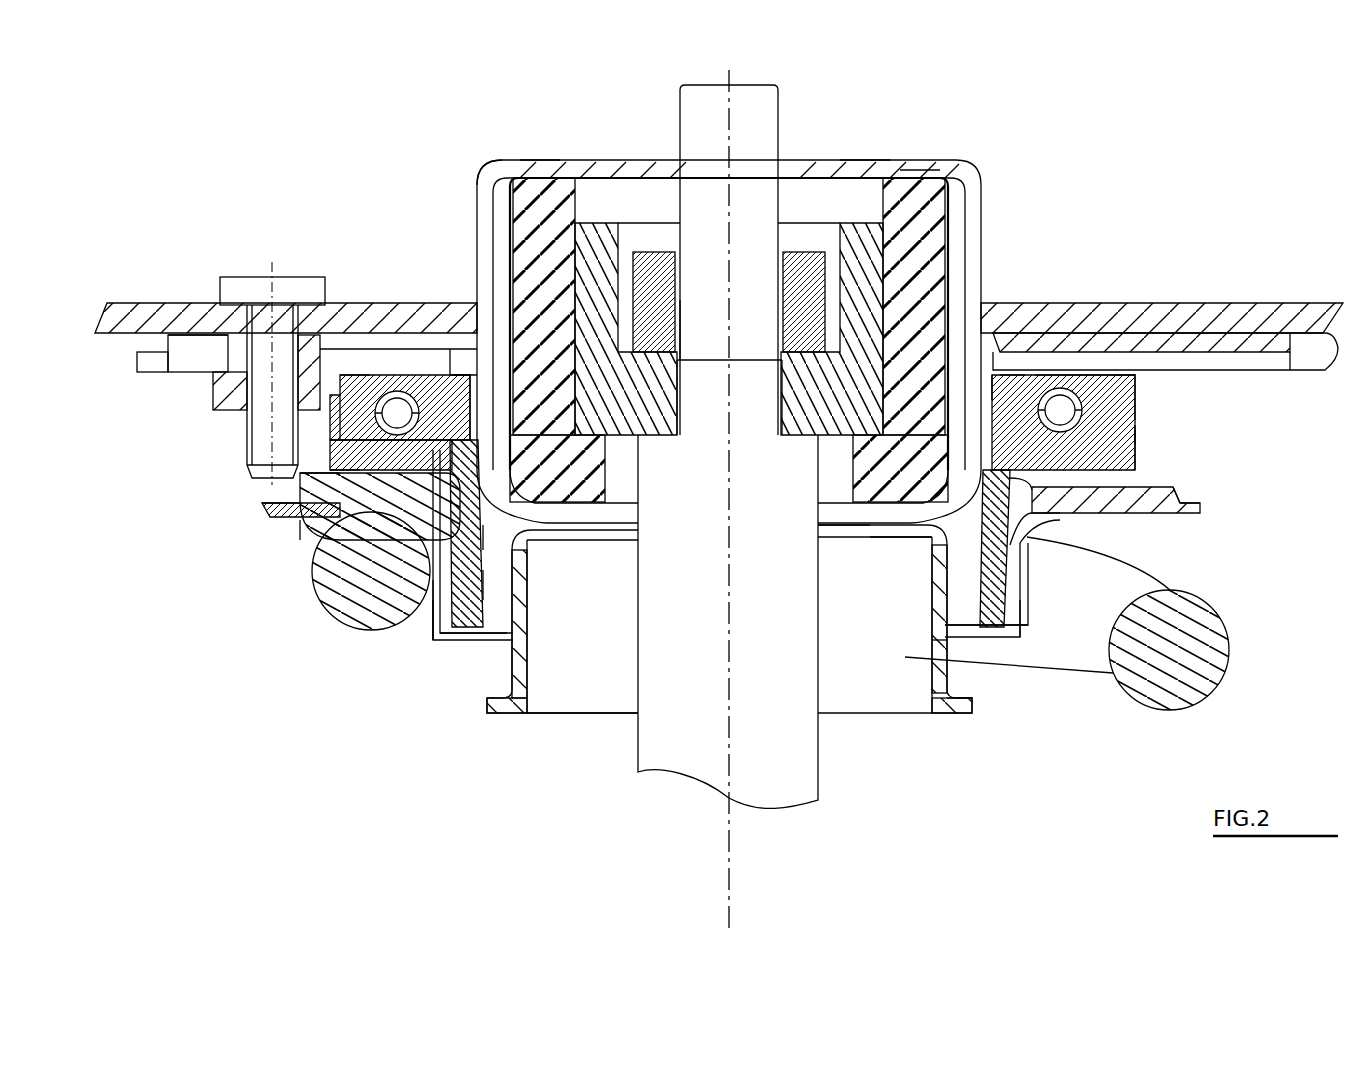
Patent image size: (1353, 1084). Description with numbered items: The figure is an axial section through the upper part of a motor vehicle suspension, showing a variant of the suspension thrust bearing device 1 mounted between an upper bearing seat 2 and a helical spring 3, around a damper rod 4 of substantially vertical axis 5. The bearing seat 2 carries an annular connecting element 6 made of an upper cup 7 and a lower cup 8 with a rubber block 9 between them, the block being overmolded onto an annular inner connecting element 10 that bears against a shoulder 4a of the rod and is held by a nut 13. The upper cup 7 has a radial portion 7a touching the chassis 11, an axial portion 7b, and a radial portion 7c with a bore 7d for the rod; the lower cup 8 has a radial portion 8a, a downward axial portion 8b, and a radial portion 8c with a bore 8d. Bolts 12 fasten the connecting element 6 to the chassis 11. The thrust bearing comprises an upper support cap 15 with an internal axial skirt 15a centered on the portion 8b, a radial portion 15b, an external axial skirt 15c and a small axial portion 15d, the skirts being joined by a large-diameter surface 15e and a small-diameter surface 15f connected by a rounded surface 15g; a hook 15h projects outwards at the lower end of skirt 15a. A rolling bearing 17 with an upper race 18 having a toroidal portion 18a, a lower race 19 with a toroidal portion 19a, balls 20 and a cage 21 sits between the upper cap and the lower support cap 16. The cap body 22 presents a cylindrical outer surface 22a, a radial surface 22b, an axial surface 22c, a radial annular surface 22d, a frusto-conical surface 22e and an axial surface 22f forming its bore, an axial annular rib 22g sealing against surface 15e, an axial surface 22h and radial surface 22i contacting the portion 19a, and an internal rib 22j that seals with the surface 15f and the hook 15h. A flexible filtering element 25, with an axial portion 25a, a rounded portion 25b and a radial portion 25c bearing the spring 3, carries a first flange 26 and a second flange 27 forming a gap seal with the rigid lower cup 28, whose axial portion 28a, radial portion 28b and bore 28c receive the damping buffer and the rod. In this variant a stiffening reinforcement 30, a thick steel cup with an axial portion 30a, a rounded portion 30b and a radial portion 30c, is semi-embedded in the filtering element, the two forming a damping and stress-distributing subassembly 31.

The suspension thrust bearing device 1 is at (1142, 438).
The upper bearing seat 2 is at (1270, 380).
The helical-type spring 3 is at (1233, 648).
The damper rod 4 is at (820, 797).
The shoulder 4a is at (660, 290).
The axis 5 is at (731, 885).
The annular connecting element 6 is at (1230, 325).
The upper cup 7 is at (1150, 333).
The radial portion 7a is at (205, 345).
The axial portion 7b is at (476, 222).
The radial portion 7c is at (540, 167).
The bore 7d is at (860, 167).
The lower cup 8 is at (183, 375).
The radial portion 8a is at (185, 362).
The axial portion 8b is at (455, 372).
The radial portion 8c is at (563, 520).
The bore 8d is at (602, 510).
The rubber block 9 is at (925, 176).
The annular inner connecting element 10 is at (604, 232).
The chassis 11 is at (97, 320).
The bolts 12 is at (300, 292).
The nut 13 is at (803, 250).
The upper support cap 15 is at (1160, 376).
The internal axial skirt 15a is at (993, 372).
The radial portion 15b is at (1045, 395).
The external axial skirt 15c is at (1130, 387).
The axial portion 15d is at (1138, 408).
The large-diameter annular radial surface 15e is at (1110, 378).
The small-diameter annular radial surface 15f is at (1017, 380).
The rounded surface 15g is at (1030, 385).
The hook 15h is at (922, 668).
The lower support cap 16 is at (1138, 468).
The rolling bearing 17 is at (1078, 395).
The upper race 18 is at (395, 372).
The toroidal portion 18a is at (410, 393).
The lower race 19 is at (1135, 490).
The toroidal portion 19a is at (1175, 438).
The rolling elements 20 is at (1062, 398).
The cage 21 is at (1202, 505).
The body 22 is at (1097, 555).
The cylindrical outer surface 22a is at (340, 477).
The radial surface 22b is at (345, 485).
The axial surface 22c is at (420, 595).
The radial annular surface 22d is at (455, 605).
The frusto-conical surface 22e is at (478, 585).
The axial surface 22f is at (478, 537).
The axial annular rib 22g is at (345, 395).
The axial surface 22h is at (352, 378).
The radial surface 22i is at (378, 400).
The internal annular rib 22j is at (440, 372).
The filtering element 25 is at (1036, 597).
The axial portion 25a is at (1022, 612).
The rounded portion 25b is at (1087, 590).
The radial portion 25c is at (1087, 515).
The first annular flange 26 is at (1172, 520).
The second annular flange 27 is at (987, 645).
The lower cup 28 is at (937, 677).
The axial portion 28a is at (918, 650).
The radial portion 28b is at (888, 540).
The bore 28c is at (848, 540).
The stiffening reinforcement 30 is at (340, 517).
The axial portion 30a is at (480, 612).
The rounded portion 30b is at (340, 536).
The radial portion 30c is at (340, 495).
The damping and stress-distributing subassembly 31 is at (1207, 540).